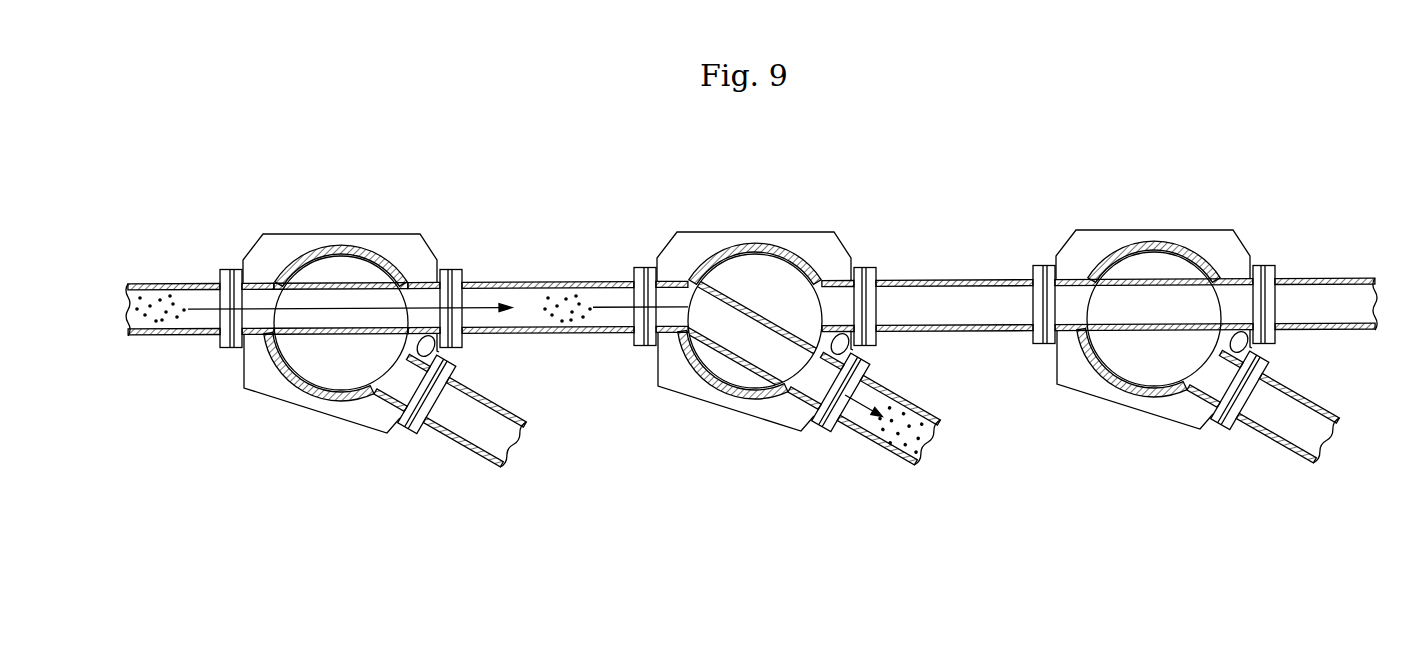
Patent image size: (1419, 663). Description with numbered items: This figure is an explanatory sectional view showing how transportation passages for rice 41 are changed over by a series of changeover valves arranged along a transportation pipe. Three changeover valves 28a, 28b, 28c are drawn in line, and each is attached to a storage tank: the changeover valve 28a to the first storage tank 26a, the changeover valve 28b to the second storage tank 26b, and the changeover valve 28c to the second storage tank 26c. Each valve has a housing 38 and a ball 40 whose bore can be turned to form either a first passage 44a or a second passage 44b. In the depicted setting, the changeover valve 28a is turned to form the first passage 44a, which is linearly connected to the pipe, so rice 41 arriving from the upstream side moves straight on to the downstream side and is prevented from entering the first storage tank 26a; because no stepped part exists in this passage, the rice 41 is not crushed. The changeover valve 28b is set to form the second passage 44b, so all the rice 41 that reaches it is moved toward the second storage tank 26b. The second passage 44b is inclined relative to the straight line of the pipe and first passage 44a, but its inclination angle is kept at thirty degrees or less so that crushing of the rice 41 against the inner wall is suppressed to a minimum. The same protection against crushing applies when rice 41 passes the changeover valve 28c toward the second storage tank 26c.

The first storage tank 26a is at (505, 399).
The second storage tank 26b is at (920, 396).
The second storage tank 26c is at (1322, 392).
The changeover valve 28a is at (343, 231).
The changeover valve 28b is at (755, 231).
The changeover valve 28c is at (1160, 228).
The valve housing 38 is at (417, 252).
The valve ball 40 is at (350, 268).
The rice 41 is at (160, 300).
The first passage 44a is at (302, 322).
The second passage 44b is at (740, 347).